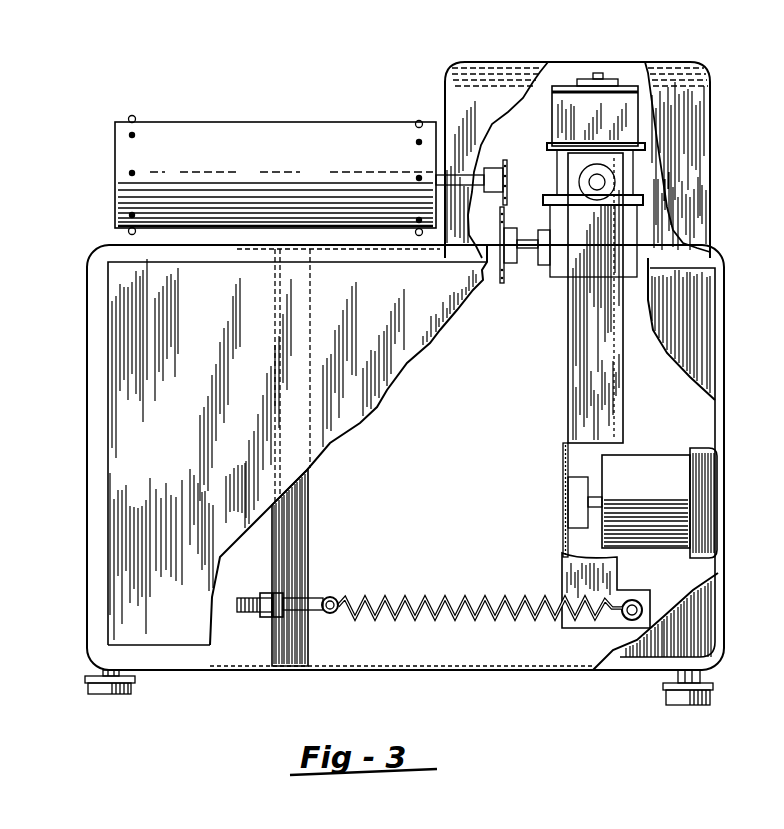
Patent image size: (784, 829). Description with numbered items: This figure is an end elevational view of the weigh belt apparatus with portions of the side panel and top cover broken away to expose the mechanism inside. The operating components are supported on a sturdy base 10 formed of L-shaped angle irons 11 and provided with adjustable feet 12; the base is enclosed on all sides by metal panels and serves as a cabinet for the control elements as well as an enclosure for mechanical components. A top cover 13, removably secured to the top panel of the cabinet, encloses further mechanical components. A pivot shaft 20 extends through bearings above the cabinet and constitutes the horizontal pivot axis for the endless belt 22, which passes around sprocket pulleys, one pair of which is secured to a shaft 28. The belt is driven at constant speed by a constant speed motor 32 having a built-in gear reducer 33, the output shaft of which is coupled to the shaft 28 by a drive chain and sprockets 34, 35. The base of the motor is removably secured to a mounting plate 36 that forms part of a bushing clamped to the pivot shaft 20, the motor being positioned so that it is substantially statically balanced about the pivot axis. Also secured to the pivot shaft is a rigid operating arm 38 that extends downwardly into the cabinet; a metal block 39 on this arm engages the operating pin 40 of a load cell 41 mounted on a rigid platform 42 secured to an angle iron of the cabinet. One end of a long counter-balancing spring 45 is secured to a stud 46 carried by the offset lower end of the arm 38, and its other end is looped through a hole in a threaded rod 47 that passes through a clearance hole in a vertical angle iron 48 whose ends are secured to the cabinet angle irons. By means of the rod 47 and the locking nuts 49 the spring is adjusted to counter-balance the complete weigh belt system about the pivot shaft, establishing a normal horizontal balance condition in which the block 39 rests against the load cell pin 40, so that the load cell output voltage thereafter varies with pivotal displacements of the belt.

The base 10 is at (76, 373).
The L-shaped angle irons 11 is at (720, 313).
The adjustable feet 12 is at (127, 685).
The top cover 13 is at (752, 107).
The pivot shaft 20 is at (606, 178).
The endless belt 22 is at (277, 122).
The shaft 28 is at (472, 175).
The constant speed motor 32 is at (628, 84).
The gear reducer 33 is at (557, 276).
The sprocket 34 is at (507, 163).
The sprocket 35 is at (503, 272).
The mounting plate 36 is at (637, 207).
The operating arm 38 is at (566, 355).
The metal block 39 is at (575, 480).
The operating pin 40 is at (598, 492).
The load cell 41 is at (663, 455).
The rigid platform 42 is at (710, 462).
The counter-balancing spring 45 is at (427, 598).
The stud 46 is at (633, 601).
The threaded rod 47 is at (318, 598).
The vertical angle iron 48 is at (300, 497).
The locking nuts 49 is at (265, 592).